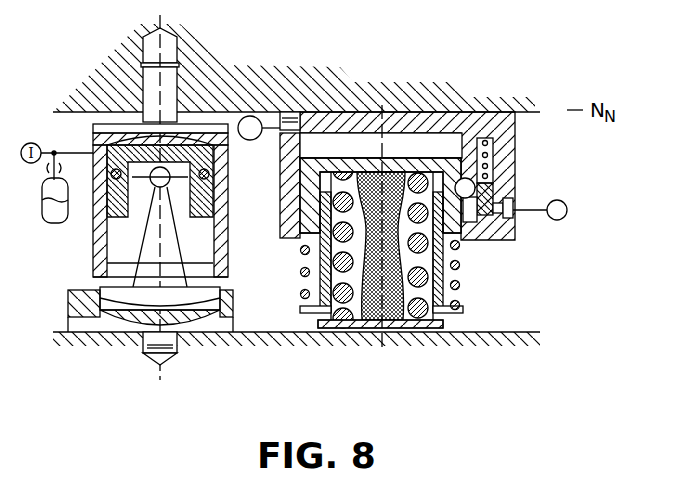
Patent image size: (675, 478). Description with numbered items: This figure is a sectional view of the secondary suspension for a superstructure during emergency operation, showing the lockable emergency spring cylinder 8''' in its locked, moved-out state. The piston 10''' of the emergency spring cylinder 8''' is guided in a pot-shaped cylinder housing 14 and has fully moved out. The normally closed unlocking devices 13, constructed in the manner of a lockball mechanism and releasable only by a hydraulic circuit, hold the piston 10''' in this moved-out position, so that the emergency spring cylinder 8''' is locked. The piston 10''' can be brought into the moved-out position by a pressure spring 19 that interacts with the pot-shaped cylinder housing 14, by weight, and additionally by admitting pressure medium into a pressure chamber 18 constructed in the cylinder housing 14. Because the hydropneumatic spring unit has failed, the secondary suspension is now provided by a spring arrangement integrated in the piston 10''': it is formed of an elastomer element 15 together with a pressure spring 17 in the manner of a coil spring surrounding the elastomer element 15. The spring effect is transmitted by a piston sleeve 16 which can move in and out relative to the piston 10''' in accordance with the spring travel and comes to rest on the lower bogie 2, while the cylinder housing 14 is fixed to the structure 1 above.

The housing wall 1 is at (331, 97).
The lower bogie 2 is at (245, 337).
The emergency spring cylinder 8''' is at (437, 227).
The piston 10''' is at (424, 247).
The unlocking devices 13 is at (493, 193).
The pot-shaped cylinder housing 14 is at (486, 126).
The elastomer element 15 is at (360, 243).
The piston sleeve 16 is at (353, 323).
The pressure spring 17 is at (418, 308).
The pressure chamber 18 is at (318, 143).
The pressure spring 19 is at (458, 263).